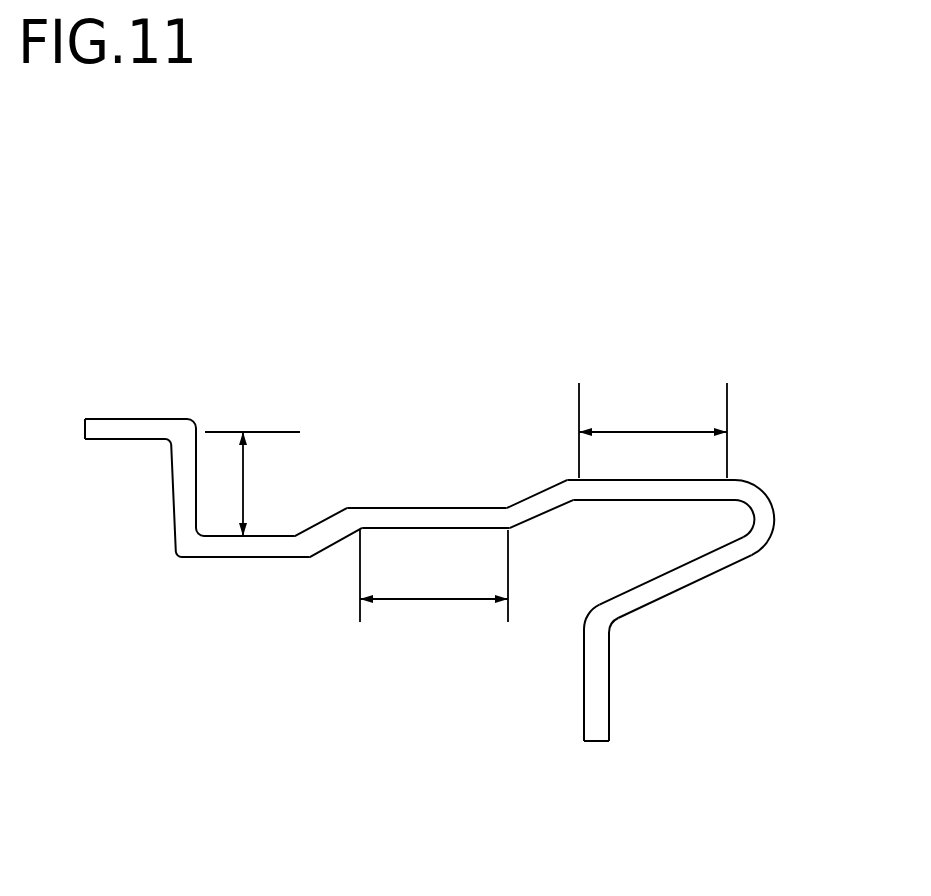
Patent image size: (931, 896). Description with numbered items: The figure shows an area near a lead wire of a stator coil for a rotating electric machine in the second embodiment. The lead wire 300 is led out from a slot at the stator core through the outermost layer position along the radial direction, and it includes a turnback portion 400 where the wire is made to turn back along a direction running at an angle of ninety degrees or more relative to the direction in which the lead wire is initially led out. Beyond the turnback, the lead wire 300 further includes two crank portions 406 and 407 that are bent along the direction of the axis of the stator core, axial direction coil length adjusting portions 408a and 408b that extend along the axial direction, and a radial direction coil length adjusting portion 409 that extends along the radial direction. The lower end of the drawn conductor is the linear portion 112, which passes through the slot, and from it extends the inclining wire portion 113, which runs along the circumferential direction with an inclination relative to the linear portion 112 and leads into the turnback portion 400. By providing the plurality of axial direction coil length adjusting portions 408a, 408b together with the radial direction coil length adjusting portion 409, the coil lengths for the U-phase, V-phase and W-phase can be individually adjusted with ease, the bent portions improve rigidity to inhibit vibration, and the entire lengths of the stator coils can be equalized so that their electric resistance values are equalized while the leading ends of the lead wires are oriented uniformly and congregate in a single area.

The lead wire 300 is at (297, 397).
The turnback portion 400 is at (765, 507).
The crank portion 406 is at (337, 525).
The crank portion 407 is at (542, 505).
The axial direction coil length adjusting portion 408a is at (653, 430).
The axial direction coil length adjusting portion 408b is at (434, 576).
The radial direction coil length adjusting portion 409 is at (252, 484).
The linear portion 112 is at (597, 710).
The inclining wire portion 113 is at (672, 580).